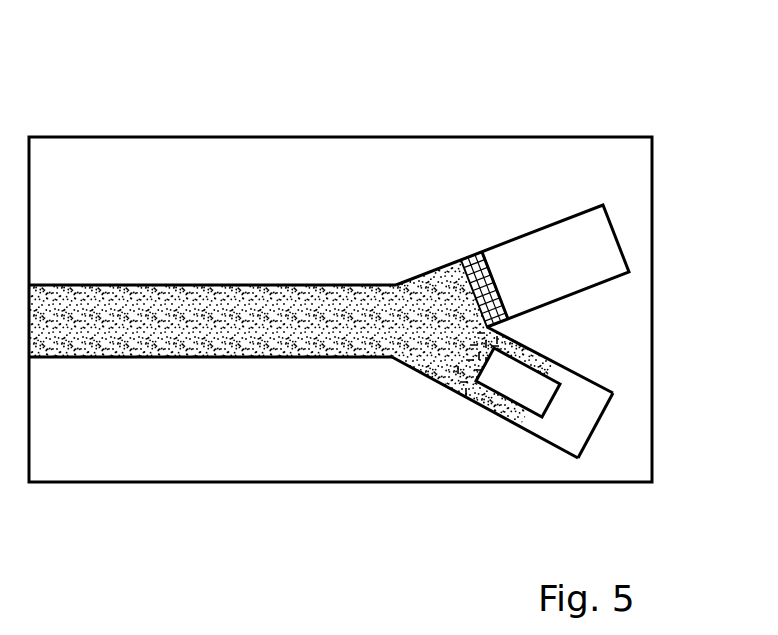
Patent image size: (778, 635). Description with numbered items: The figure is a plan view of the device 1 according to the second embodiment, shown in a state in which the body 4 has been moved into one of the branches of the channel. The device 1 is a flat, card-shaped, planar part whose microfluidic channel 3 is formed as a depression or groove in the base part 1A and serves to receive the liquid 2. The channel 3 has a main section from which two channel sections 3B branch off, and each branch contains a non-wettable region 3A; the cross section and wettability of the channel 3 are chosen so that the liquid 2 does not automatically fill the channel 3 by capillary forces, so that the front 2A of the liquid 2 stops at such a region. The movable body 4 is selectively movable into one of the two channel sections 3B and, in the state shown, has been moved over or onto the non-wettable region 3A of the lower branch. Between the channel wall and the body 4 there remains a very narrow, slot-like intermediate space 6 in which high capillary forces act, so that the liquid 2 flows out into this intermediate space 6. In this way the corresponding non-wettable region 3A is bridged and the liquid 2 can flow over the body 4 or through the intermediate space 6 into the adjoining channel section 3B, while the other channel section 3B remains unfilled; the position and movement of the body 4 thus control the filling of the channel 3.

The device 1 is at (360, 282).
The base part 1A is at (202, 448).
The liquid 2 is at (183, 307).
The front 2A is at (535, 423).
The channel 3 is at (110, 288).
The non-wettable region 3A is at (475, 253).
The channel section 3B is at (553, 243).
The body 4 is at (540, 402).
The intermediate space 6 is at (552, 372).